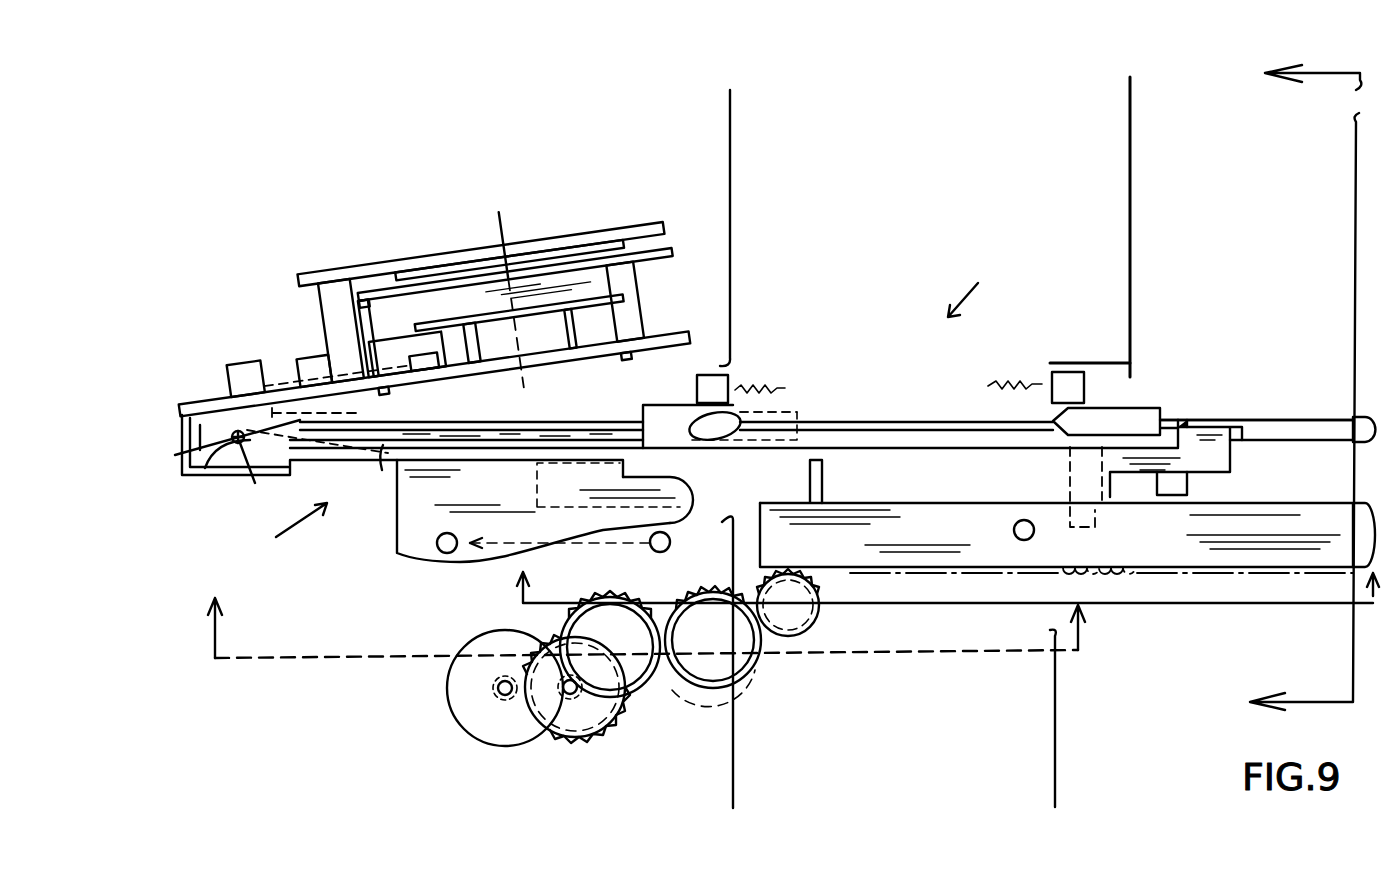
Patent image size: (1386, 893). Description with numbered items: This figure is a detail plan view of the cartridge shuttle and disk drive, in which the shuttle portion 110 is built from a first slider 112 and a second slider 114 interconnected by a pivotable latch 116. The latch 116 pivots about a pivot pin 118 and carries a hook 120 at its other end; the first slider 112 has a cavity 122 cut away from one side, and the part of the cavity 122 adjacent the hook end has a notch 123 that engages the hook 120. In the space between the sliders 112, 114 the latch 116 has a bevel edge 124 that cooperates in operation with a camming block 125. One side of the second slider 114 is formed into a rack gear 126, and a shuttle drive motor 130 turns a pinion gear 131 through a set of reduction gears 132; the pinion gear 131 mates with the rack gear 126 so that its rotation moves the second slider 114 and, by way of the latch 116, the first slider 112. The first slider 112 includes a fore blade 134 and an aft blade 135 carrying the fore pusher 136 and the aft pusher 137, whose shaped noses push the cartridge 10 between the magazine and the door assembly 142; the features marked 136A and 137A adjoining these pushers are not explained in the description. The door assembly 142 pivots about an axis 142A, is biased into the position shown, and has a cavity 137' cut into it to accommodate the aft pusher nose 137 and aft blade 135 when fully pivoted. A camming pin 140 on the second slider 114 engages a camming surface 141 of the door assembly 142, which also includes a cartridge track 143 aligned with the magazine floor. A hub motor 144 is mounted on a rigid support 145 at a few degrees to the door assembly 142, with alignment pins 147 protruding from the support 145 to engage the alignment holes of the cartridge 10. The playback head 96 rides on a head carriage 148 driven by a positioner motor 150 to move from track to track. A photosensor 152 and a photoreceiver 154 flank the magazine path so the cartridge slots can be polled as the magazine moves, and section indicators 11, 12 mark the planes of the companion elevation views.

The cartridge 10 is at (1291, 390).
The section line 11- 11 is at (951, 449).
The section line 12- 12 is at (657, 689).
The playback head 96 is at (409, 335).
The shuttle portion 110 is at (982, 293).
The first slider 112 is at (1290, 430).
The second slider 114 is at (1172, 552).
The pivotable latch 116 is at (1223, 453).
The pivot pin 118 is at (1100, 520).
The hook 120 is at (1182, 424).
The cavity 122 is at (857, 432).
The notch 123 is at (1175, 422).
The bevel edge 124 is at (1187, 484).
The camming block 125 is at (823, 478).
The rack gear 126 is at (860, 574).
The shuttle drive motor 130 is at (530, 740).
The pinion gear 131 is at (815, 622).
The reduction gears 132 is at (674, 694).
The fore blade 134 is at (1237, 418).
The aft blade 135 is at (635, 440).
The fore pusher 136 is at (1115, 421).
The nut seat 136A is at (802, 413).
The aft pusher 137 is at (721, 424).
The cam link 137A is at (352, 416).
The cavity 137' is at (362, 473).
The camming pin 140 is at (1000, 529).
The camming surface 141 is at (590, 530).
The door assembly 142 is at (434, 488).
The axis 142A is at (200, 478).
The cartridge track 143 is at (530, 424).
The hub motor 144 is at (503, 330).
The rigid support 145 is at (320, 293).
The alignment pins 147 is at (390, 390).
The head carriage 148 is at (380, 352).
The positioner motor 150 is at (250, 373).
The photosensor 152 is at (1068, 372).
The photoreceiver 154 is at (725, 380).